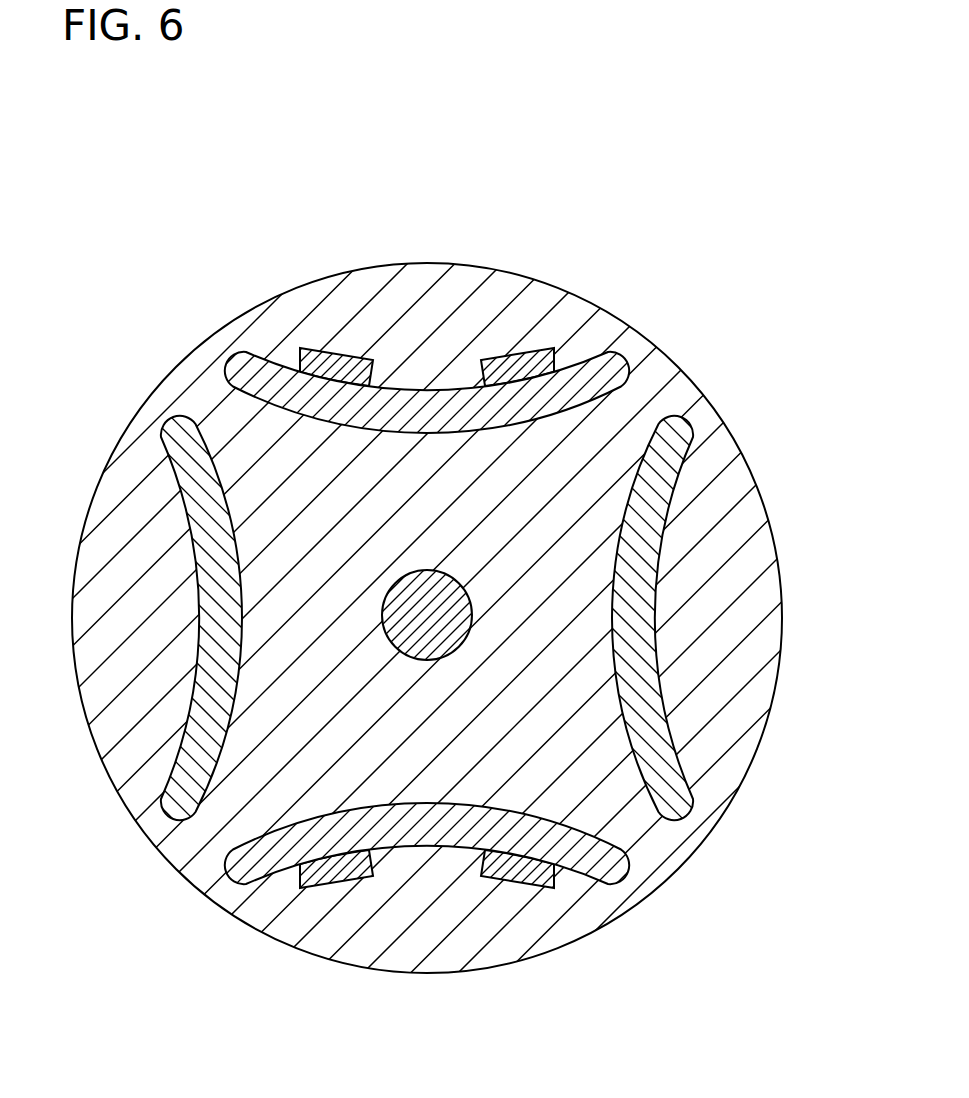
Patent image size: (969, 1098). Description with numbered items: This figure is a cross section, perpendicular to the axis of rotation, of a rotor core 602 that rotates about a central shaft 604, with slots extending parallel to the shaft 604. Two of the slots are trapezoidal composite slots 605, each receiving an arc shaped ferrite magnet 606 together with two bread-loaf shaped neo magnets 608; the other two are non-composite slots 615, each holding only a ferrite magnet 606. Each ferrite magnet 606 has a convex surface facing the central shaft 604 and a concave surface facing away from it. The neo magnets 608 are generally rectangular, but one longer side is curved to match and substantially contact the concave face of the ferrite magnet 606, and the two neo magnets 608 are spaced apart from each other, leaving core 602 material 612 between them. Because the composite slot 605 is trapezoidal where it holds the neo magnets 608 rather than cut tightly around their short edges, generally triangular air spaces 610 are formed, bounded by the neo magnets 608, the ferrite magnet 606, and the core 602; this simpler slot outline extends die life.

The core 602 is at (543, 943).
The central shaft 604 is at (183, 866).
The trapezoidal composite slot 605 is at (278, 350).
The arc shaped ferrite magnet 606 is at (630, 365).
The bread-loaf shaped neo magnet 608 is at (347, 352).
The triangular air space 610 is at (291, 348).
The central rib between blocks 612 is at (424, 375).
The non-composite slot 615 is at (693, 440).